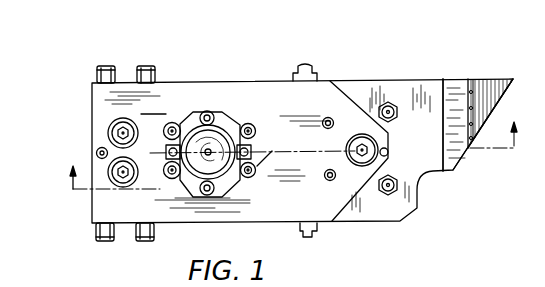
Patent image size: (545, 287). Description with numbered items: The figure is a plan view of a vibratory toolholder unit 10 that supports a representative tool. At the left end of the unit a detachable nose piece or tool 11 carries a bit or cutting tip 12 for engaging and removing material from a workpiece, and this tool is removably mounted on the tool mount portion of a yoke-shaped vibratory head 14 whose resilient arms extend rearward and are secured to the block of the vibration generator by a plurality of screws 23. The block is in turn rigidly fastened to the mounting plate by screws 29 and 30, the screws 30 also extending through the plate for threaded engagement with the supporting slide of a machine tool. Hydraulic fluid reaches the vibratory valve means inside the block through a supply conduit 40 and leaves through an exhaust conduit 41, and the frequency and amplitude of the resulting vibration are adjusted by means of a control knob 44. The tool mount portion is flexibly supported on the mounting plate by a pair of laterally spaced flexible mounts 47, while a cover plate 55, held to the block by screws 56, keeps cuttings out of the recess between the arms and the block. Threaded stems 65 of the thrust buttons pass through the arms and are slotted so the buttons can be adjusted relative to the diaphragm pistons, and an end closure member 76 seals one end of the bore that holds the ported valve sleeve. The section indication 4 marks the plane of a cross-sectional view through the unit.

The section line 4- 4 is at (289, 170).
The vibratory toolholder unit 10 is at (372, 80).
The nose piece or tool 11 is at (477, 79).
The bit or cutting tip 12 is at (513, 79).
The vibratory head 14 is at (426, 80).
The screws 23 is at (137, 75).
The screws 29 is at (108, 172).
The screws 30 is at (347, 146).
The supply conduit 40 is at (173, 123).
The exhaust conduit 41 is at (172, 179).
The control knob 44 is at (218, 140).
The flexible mounts 47 is at (398, 172).
The cover plate 55 is at (153, 105).
The screws 56 is at (325, 118).
The threaded stems 65 is at (311, 64).
The end closure member 76 is at (214, 114).